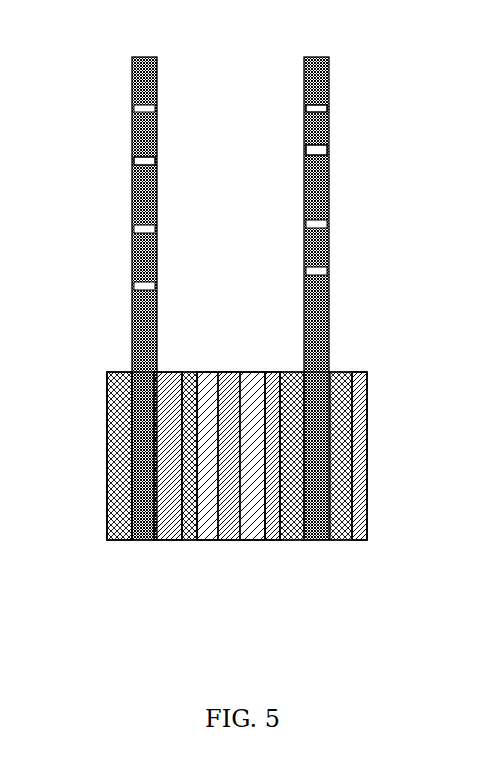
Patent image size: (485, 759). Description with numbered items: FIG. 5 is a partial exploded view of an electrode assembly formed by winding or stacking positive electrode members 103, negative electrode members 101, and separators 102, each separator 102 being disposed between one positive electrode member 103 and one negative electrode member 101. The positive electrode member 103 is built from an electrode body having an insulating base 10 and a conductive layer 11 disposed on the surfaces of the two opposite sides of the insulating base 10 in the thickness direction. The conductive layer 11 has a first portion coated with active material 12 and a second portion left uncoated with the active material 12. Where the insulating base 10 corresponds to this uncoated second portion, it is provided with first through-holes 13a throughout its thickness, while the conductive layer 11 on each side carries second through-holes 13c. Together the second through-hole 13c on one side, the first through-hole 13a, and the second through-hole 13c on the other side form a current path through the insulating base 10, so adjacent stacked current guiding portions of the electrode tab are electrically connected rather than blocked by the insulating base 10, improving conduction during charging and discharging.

The insulating base 10 is at (157, 198).
The conductive layer 11 is at (130, 258).
The active material 12 is at (110, 385).
The first through-hole 13a is at (135, 157).
The second through-hole 13c is at (330, 155).
The negative electrode member 101 is at (263, 543).
The separator 102 is at (172, 541).
The positive electrode member 103 is at (115, 541).